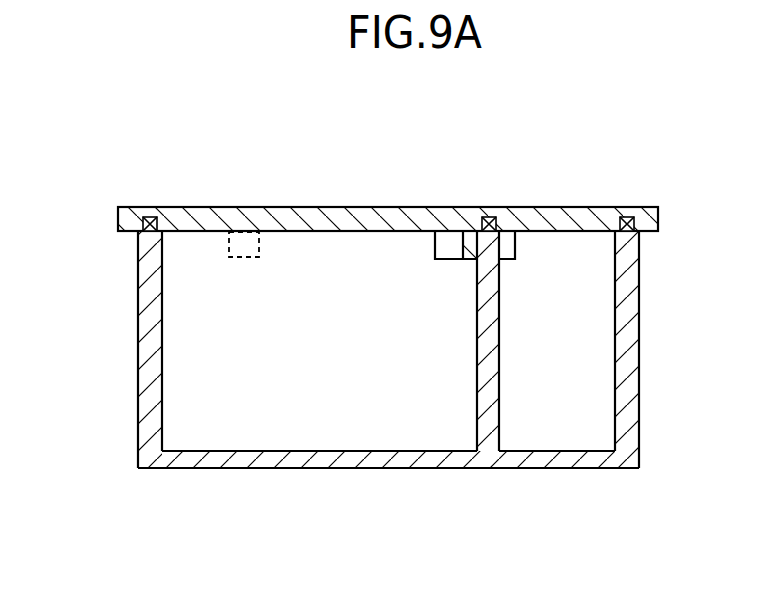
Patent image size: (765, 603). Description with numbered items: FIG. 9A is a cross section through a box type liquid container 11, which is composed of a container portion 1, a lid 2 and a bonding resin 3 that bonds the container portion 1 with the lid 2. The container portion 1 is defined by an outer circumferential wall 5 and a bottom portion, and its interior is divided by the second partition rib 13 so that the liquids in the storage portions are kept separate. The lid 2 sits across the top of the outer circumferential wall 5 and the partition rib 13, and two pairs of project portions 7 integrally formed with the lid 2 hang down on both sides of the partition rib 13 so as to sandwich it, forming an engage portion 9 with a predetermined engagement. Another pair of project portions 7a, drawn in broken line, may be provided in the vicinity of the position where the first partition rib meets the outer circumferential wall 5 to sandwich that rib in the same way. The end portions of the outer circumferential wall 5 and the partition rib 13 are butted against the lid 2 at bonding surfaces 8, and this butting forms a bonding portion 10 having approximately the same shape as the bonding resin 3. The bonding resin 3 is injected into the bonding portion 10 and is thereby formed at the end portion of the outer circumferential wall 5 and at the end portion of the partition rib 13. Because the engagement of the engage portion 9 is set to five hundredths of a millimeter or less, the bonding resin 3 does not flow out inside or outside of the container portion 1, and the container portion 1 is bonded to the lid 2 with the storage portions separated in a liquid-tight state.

The container portion 1 is at (180, 468).
The lid 2 is at (659, 219).
The bonding resin 3 is at (150, 217).
The bonding portion 10 is at (396, 178).
The outer circumferential wall 5 is at (138, 343).
The project portions 7 is at (450, 259).
The project portions 7a is at (235, 258).
The bonding surfaces 8 is at (143, 226).
The engage portion 9 is at (470, 252).
The liquid container 11 is at (82, 245).
The partition rib 13 is at (477, 408).